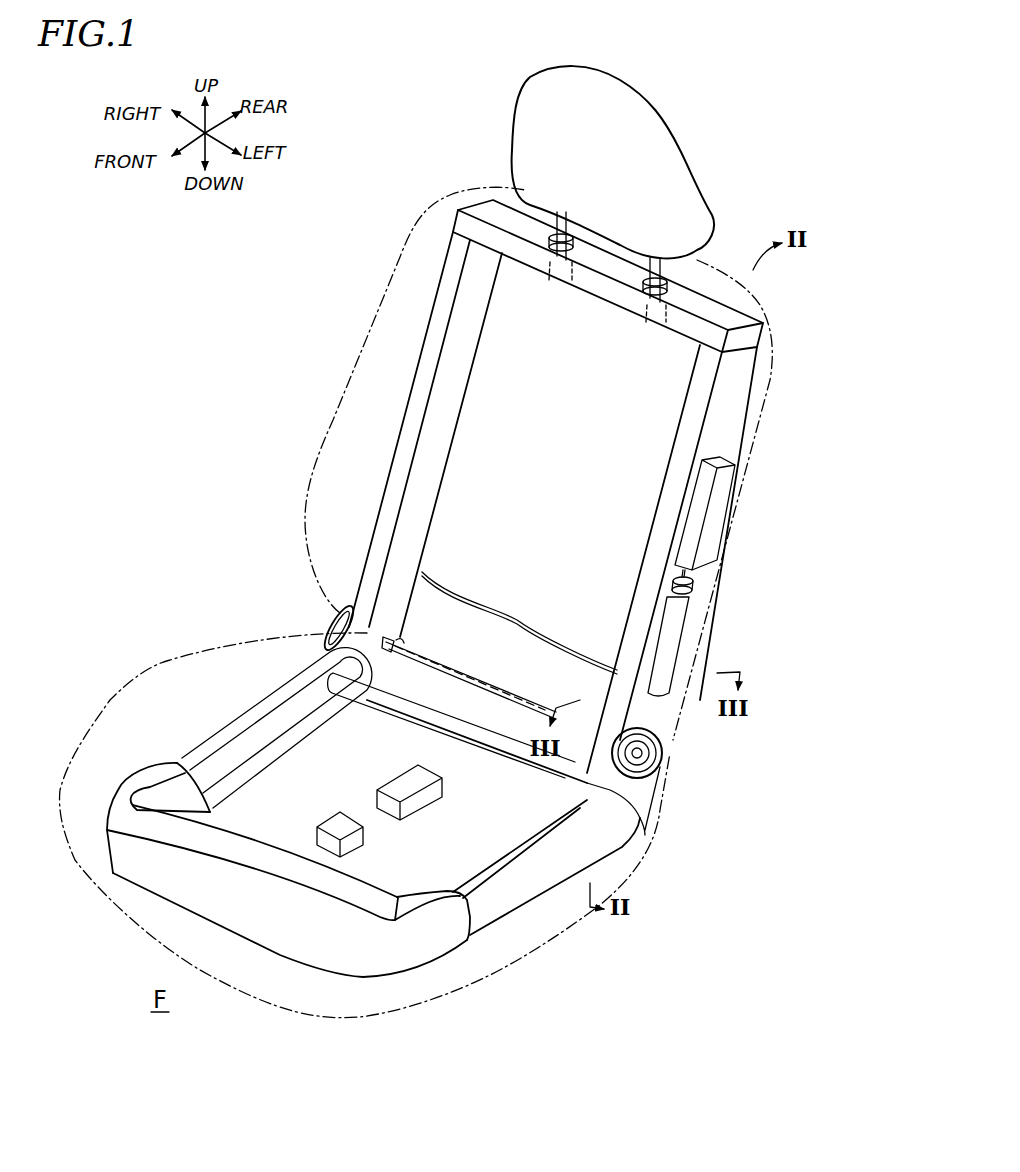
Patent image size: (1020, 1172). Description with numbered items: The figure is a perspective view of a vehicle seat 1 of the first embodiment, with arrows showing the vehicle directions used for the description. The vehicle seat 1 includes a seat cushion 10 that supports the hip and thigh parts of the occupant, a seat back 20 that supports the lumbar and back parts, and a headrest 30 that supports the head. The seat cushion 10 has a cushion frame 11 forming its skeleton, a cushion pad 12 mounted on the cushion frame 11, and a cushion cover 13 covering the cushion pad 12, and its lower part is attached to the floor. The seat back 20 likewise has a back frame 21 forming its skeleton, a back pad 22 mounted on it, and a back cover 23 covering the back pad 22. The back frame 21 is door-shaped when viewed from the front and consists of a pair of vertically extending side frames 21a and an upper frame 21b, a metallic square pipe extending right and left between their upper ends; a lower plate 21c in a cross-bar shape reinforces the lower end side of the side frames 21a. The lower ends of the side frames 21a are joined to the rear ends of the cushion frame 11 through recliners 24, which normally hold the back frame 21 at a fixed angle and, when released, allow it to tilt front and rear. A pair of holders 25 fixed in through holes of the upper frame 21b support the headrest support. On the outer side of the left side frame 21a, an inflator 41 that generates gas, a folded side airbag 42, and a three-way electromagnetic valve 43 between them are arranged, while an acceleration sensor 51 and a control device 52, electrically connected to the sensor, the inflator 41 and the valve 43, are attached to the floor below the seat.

The vehicle seat 1 is at (233, 393).
The seat cushion 10 is at (140, 671).
The cushion frame 11 is at (234, 726).
The cushion pad 12 is at (123, 723).
The cushion cover 13 is at (87, 730).
The seat back 20 is at (313, 462).
The back frame 21 is at (436, 277).
The side frames 21a is at (444, 440).
The upper frame 21b is at (717, 300).
The lower plate 21c is at (530, 640).
The back pad 22 is at (396, 323).
The back cover 23 is at (352, 368).
The recliner 24 is at (331, 618).
The holders 25 is at (640, 300).
The headrest 30 is at (518, 121).
The inflator 41 is at (680, 635).
The side airbag 42 is at (738, 505).
The three-way electromagnetic valve 43 is at (690, 588).
The acceleration sensor 51 is at (336, 822).
The control device 52 is at (413, 778).